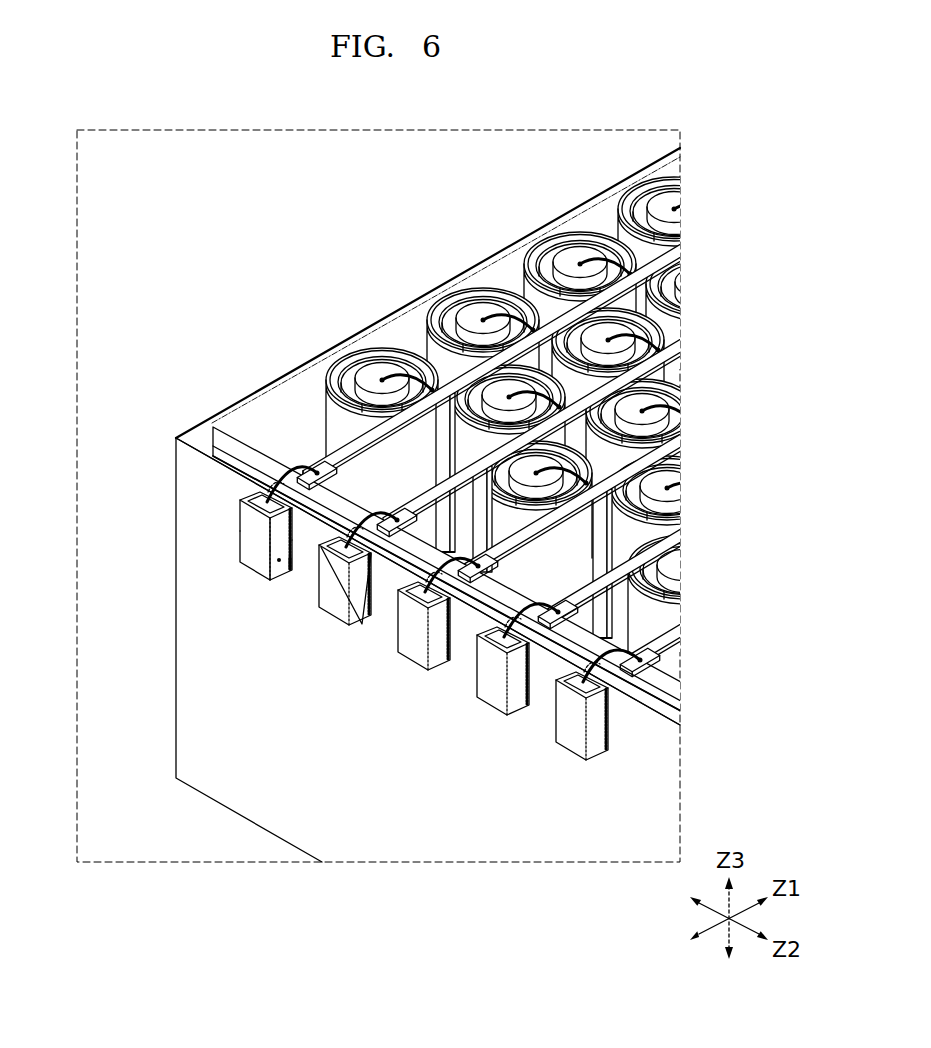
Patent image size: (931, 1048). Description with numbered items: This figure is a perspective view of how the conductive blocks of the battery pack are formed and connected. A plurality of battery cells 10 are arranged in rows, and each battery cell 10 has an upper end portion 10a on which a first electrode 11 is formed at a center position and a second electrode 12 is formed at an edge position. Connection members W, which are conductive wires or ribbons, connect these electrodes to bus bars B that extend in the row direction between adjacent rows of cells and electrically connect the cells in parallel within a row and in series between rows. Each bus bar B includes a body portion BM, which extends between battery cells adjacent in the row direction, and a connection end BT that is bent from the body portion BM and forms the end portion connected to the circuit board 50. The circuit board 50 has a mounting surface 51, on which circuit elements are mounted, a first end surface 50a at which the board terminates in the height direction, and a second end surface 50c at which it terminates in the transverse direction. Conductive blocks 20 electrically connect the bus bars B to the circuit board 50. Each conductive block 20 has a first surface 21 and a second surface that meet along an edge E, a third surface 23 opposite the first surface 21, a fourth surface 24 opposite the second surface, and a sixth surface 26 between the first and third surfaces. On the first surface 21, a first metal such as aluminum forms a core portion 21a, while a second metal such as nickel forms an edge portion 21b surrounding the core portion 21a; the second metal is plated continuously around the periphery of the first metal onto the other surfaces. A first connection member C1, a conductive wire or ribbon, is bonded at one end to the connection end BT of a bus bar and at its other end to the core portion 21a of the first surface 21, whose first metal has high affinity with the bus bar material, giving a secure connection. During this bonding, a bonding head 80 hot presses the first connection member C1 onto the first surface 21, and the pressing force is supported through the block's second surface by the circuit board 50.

The battery cell 10 is at (568, 240).
The upper end portion 10a is at (568, 243).
The first electrode 11 is at (565, 260).
The second electrode 12 is at (598, 243).
The connection member W is at (497, 311).
The bus bar B is at (451, 363).
The body portion BM is at (477, 368).
The connection end BT is at (262, 412).
The first surface 21 is at (197, 418).
The core portion 21a is at (264, 492).
The edge portion 21b is at (179, 447).
The conductive block 20 is at (206, 502).
The sixth surface 26 is at (255, 524).
The fourth surface 24 is at (255, 555).
The third surface 23 is at (281, 560).
The first connection member C1 is at (324, 476).
The edge E is at (266, 504).
The bonding head 80 is at (362, 626).
The circuit board 50 is at (423, 505).
The first end surface 50a is at (648, 699).
The second end surface 50c is at (175, 710).
The mounting surface 51 is at (649, 751).